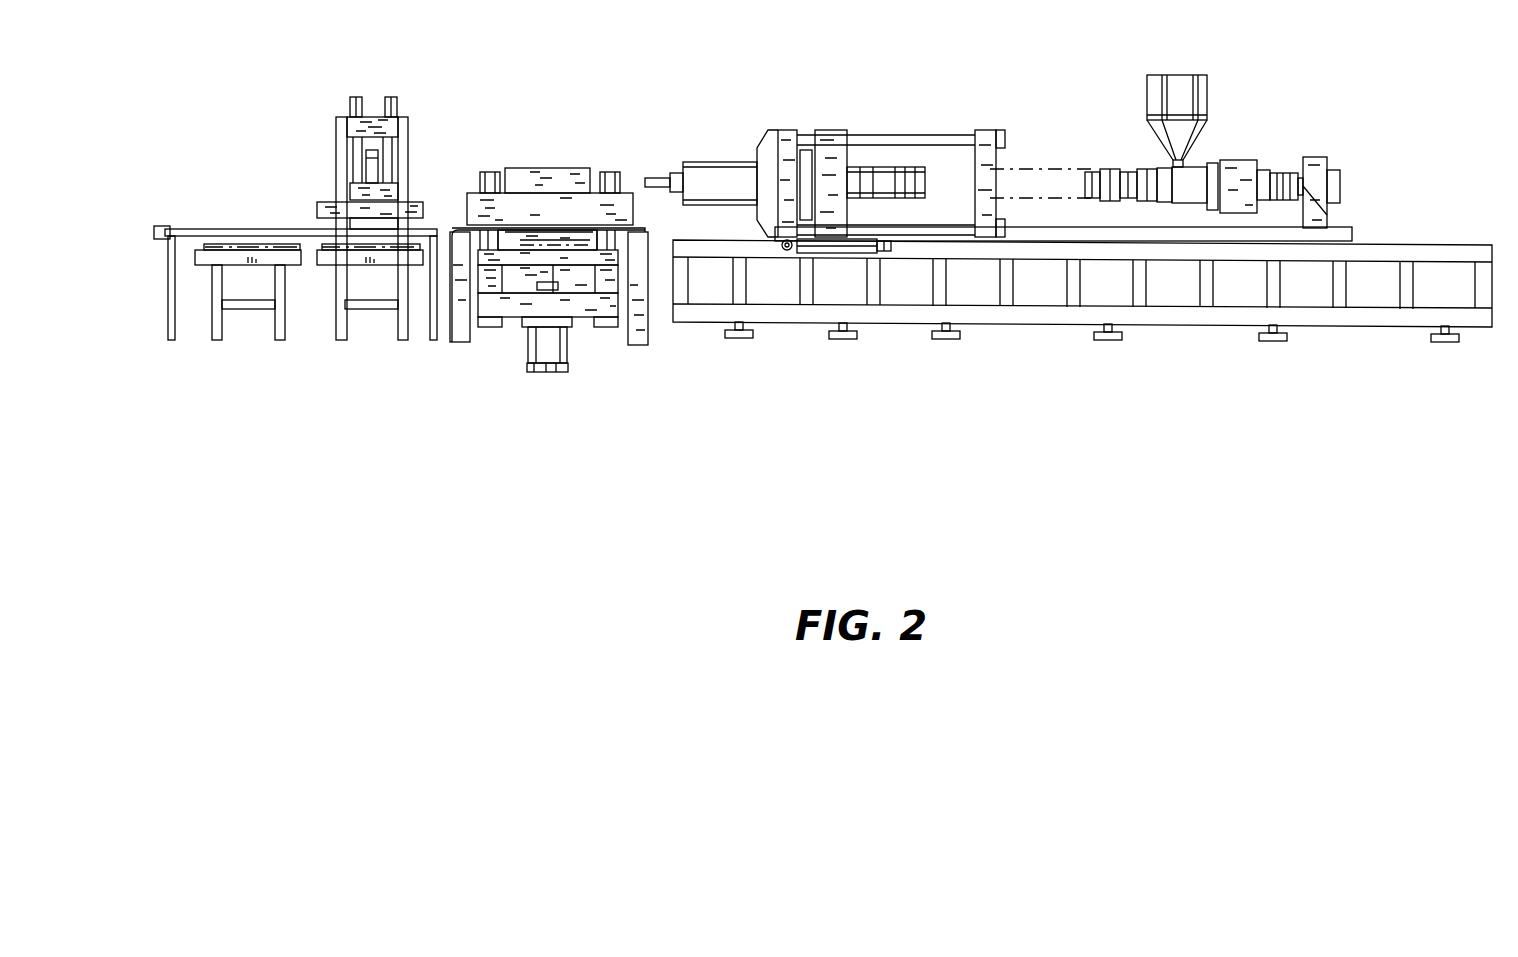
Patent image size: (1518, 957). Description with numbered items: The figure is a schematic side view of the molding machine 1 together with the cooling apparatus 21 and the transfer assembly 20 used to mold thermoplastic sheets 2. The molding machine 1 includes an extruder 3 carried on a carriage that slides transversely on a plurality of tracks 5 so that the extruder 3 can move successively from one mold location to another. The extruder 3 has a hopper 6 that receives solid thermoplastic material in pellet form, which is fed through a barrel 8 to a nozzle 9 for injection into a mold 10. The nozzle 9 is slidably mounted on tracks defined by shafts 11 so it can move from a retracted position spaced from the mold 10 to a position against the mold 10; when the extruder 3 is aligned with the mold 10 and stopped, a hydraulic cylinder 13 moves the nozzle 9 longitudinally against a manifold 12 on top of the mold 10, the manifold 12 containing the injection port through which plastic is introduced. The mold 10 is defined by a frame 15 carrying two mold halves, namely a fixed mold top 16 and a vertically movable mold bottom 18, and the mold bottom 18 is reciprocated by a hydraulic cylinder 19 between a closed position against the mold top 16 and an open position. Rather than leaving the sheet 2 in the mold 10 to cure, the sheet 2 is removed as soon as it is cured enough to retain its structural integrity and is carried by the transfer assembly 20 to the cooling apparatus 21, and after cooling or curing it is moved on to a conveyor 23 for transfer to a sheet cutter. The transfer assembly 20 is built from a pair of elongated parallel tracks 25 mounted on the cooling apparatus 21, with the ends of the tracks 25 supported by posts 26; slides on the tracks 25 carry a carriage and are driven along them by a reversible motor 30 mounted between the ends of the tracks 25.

The molding machine 1 is at (1230, 68).
The thermoplastic sheet 2 is at (251, 241).
The extruder 3 is at (1240, 163).
The tracks 5 is at (842, 340).
The hopper 6 is at (1158, 98).
The barrel 8 is at (1092, 176).
The nozzle 9 is at (655, 175).
The mold 10 is at (470, 194).
The shafts 11 is at (921, 230).
The manifold 12 is at (548, 170).
The hydraulic cylinder 13 is at (848, 256).
The frame 15 is at (637, 330).
The mold top 16 is at (567, 240).
The mold bottom 18 is at (527, 258).
The hydraulic cylinder 19 is at (545, 356).
The transfer assembly 20 is at (210, 233).
The cooling apparatus 21 is at (328, 104).
The conveyor 23 is at (212, 306).
The tracks 25 is at (307, 236).
The posts 26 is at (171, 342).
The reversible motor 30 is at (163, 230).